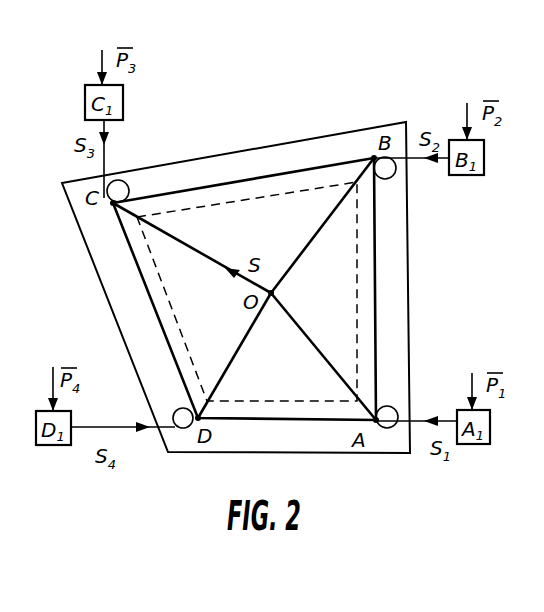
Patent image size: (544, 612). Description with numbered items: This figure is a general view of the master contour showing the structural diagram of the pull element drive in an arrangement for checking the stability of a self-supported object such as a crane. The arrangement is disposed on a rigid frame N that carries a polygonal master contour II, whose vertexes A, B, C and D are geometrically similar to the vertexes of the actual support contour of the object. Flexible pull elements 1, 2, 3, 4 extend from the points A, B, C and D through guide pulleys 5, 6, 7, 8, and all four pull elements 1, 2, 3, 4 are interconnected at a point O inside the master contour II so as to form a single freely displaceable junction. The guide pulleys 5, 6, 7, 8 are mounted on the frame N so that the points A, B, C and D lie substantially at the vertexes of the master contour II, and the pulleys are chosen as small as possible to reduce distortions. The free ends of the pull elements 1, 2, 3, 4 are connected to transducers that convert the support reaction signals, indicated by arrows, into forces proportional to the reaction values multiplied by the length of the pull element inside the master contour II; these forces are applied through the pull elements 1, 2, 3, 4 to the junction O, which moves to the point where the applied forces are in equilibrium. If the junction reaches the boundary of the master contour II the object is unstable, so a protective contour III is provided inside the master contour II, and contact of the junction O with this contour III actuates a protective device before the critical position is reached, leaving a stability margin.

The flexible pull element 1 is at (299, 328).
The flexible pull element 2 is at (315, 238).
The flexible pull element 3 is at (203, 257).
The flexible pull element 4 is at (231, 366).
The guide pulley 5 is at (396, 410).
The guide pulley 6 is at (395, 175).
The guide pulley 7 is at (122, 182).
The guide pulley 8 is at (173, 428).
The master contour II is at (237, 178).
The protective contour III is at (275, 193).
The rigid frame N is at (345, 142).